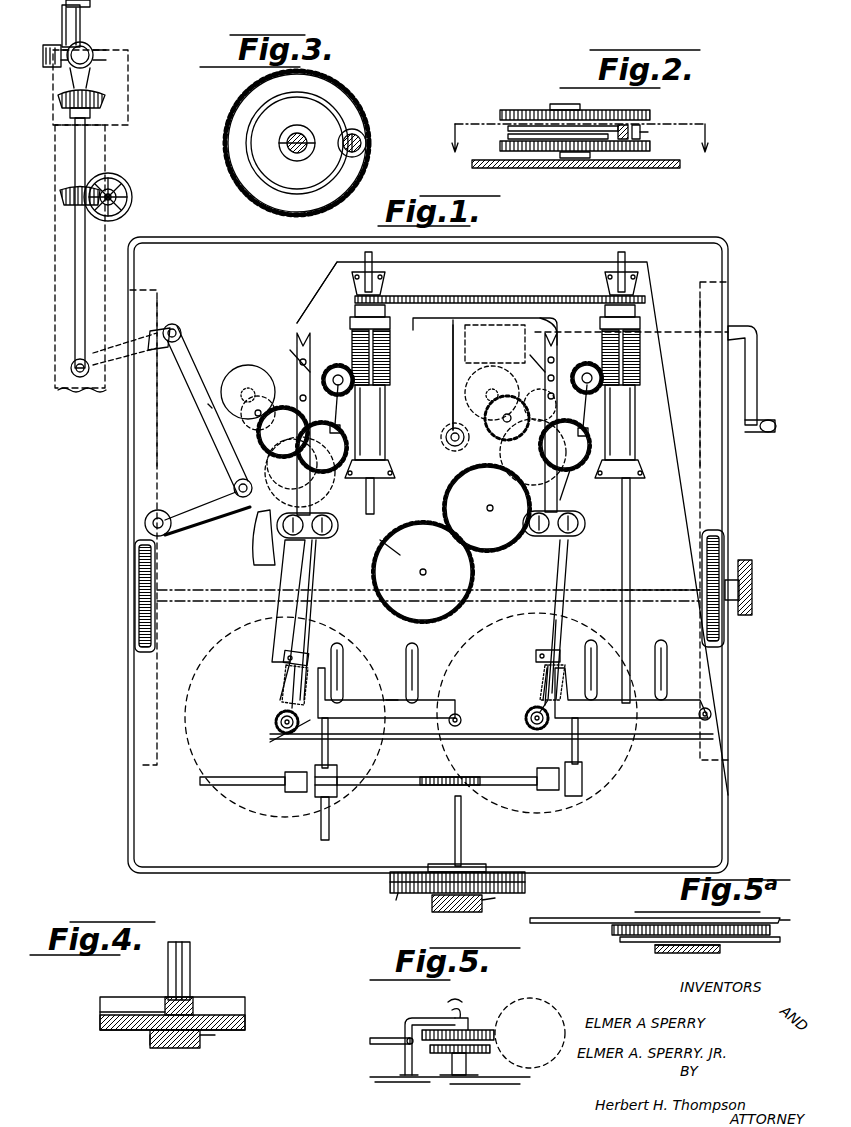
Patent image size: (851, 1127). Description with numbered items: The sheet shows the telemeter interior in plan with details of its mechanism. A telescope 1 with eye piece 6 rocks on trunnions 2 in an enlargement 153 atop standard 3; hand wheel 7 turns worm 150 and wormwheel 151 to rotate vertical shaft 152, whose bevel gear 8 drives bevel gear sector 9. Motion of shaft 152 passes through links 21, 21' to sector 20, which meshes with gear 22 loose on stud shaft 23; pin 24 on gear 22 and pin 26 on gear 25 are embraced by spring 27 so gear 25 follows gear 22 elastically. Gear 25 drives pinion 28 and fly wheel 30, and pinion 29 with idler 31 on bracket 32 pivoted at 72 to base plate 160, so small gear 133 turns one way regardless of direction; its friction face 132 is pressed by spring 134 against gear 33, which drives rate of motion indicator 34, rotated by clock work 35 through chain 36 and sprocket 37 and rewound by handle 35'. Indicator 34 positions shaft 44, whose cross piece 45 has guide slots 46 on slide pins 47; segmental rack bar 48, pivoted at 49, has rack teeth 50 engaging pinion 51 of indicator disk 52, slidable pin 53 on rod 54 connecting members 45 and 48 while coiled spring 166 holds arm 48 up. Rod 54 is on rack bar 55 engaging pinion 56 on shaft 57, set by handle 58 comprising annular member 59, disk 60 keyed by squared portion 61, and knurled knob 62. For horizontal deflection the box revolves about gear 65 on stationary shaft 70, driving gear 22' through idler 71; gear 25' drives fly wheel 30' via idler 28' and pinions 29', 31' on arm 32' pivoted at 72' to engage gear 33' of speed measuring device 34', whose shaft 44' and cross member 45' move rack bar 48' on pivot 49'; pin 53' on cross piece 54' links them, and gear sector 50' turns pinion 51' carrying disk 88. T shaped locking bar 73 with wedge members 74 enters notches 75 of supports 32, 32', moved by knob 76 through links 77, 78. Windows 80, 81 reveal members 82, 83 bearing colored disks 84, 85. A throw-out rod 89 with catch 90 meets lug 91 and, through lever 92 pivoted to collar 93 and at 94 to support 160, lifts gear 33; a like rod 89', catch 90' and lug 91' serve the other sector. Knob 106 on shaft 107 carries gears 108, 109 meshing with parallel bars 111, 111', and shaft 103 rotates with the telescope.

In FIG. 1, the telescope 1 is at (82, 25).
In FIG. 1, the horizontal axis trunnions 2 is at (89, 58).
In FIG. 1, the standard 3 is at (55, 262).
In FIG. 2, the standard 3 is at (579, 132).
In FIG. 1, the eye piece 6 is at (54, 46).
In FIG. 1, the hand wheel 7 is at (130, 183).
In FIG. 1, the bevel gear 8 is at (90, 113).
In FIG. 1, the bevel gear sector 9 is at (106, 100).
In FIG. 1, the worm 150 is at (118, 200).
In FIG. 1, the wormwheel 151 is at (72, 207).
In FIG. 1, the vertical shaft 152 is at (88, 154).
In FIG. 1, the enlargement 153 is at (128, 78).
In FIG. 1, the sector 20 is at (210, 408).
In FIG. 1, the link 21 is at (207, 410).
In FIG. 1, the link 21' is at (137, 335).
In FIG. 1, the gear 22 is at (302, 472).
In FIG. 3, the gear 22 is at (301, 143).
In FIG. 2, the gear 22 is at (588, 148).
In FIG. 1, the gear 22' is at (533, 452).
In FIG. 1, the stud shaft 23 is at (292, 464).
In FIG. 3, the stud shaft 23 is at (293, 133).
In FIG. 2, the stud shaft 23 is at (560, 108).
In FIG. 3, the pin 24 is at (366, 140).
In FIG. 2, the pin 24 is at (650, 128).
In FIG. 1, the second gear 25 is at (322, 447).
In FIG. 2, the second gear 25 is at (642, 113).
In FIG. 1, the gear 25' is at (581, 486).
In FIG. 3, the pin 26 is at (350, 132).
In FIG. 2, the pin 26 is at (615, 112).
In FIG. 3, the spring 27 is at (287, 192).
In FIG. 2, the spring 27 is at (508, 137).
In FIG. 1, the pinion 28 is at (258, 400).
In FIG. 1, the idler 28' is at (506, 424).
In FIG. 1, the pinion 29 is at (340, 409).
In FIG. 5a, the pinion 29 is at (685, 944).
In FIG. 1, the pinion 29' is at (535, 401).
In FIG. 1, the fly wheel 30 is at (239, 392).
In FIG. 1, the fly wheel 30' is at (492, 393).
In FIG. 1, the idler 31 is at (313, 416).
In FIG. 5a, the idler 31 is at (704, 949).
In FIG. 1, the second pinion 31' is at (538, 417).
In FIG. 1, the bracket 32 is at (283, 432).
In FIG. 5a, the bracket 32 is at (655, 912).
In FIG. 1, the arm 32' is at (565, 445).
In FIG. 1, the gear 33 is at (338, 367).
In FIG. 5, the gear 33 is at (472, 1029).
In FIG. 1, the gear 33' is at (587, 366).
In FIG. 1, the rate of motion indicator 34 is at (387, 409).
In FIG. 5, the rate of motion indicator 34 is at (530, 1022).
In FIG. 1, the speed measuring device 34' is at (631, 391).
In FIG. 1, the clock work 35 is at (495, 344).
In FIG. 1, the handle 35' is at (755, 379).
In FIG. 1, the chain 36 is at (446, 296).
In FIG. 1, the sprocket 37 is at (382, 290).
In FIG. 1, the shaft 44 is at (393, 546).
In FIG. 1, the shaft 44' is at (642, 590).
In FIG. 1, the cross piece 45 is at (389, 693).
In FIG. 1, the cross member 45' is at (626, 670).
In FIG. 1, the guide slots 46 is at (418, 648).
In FIG. 1, the slide pins 47 is at (418, 680).
In FIG. 1, the segmental rack bar 48 is at (487, 714).
In FIG. 1, the rack bar 48' is at (631, 714).
In FIG. 1, the pivot 49 is at (461, 705).
In FIG. 1, the pivot 49' is at (695, 701).
In FIG. 1, the rack teeth 50 is at (308, 685).
In FIG. 1, the gear sector 50' is at (535, 684).
In FIG. 1, the pinion 51 is at (269, 726).
In FIG. 1, the pinion 51' is at (520, 722).
In FIG. 1, the indicator disk 52 is at (190, 770).
In FIG. 1, the slidable pin 53 is at (340, 743).
In FIG. 1, the pin 53' is at (594, 741).
In FIG. 1, the rod 54 is at (300, 770).
In FIG. 1, the cross piece 54' is at (550, 767).
In FIG. 1, the slidable rack bar 55 is at (372, 788).
In FIG. 1, the pinion 56 is at (468, 776).
In FIG. 1, the shaft 57 is at (461, 830).
In FIG. 4, the shaft 57 is at (190, 960).
In FIG. 1, the setting handle 58 is at (501, 905).
In FIG. 4, the setting handle 58 is at (200, 1036).
In FIG. 1, the inner annular member 59 is at (390, 884).
In FIG. 4, the inner annular member 59 is at (120, 1000).
In FIG. 1, the intermediate disk 60 is at (397, 905).
In FIG. 4, the intermediate disk 60 is at (115, 1030).
In FIG. 4, the squared portion 61 is at (155, 1046).
In FIG. 1, the knurled knob 62 is at (457, 911).
In FIG. 4, the knurled knob 62 is at (185, 1048).
In FIG. 1, the gear 65 is at (470, 568).
In FIG. 1, the stationary shaft 70 is at (426, 572).
In FIG. 1, the idler 71 is at (487, 508).
In FIG. 1, the pivot 72 is at (280, 355).
In FIG. 5a, the pivot 72 is at (687, 958).
In FIG. 1, the pivot 72' is at (525, 358).
In FIG. 1, the T shaped locking bar 73 is at (485, 374).
In FIG. 1, the wedge shaped projecting members 74 is at (297, 323).
In FIG. 1, the notches 75 is at (557, 326).
In FIG. 5a, the notches 75 is at (796, 920).
In FIG. 1, the knob 76 is at (452, 452).
In FIG. 1, the link 77 is at (446, 438).
In FIG. 1, the second link 78 is at (453, 352).
In FIG. 1, the window 80 is at (288, 601).
In FIG. 1, the window 81 is at (566, 536).
In FIG. 1, the member 82 is at (315, 620).
In FIG. 1, the member 83 is at (545, 536).
In FIG. 1, the colored disk 84 is at (220, 536).
In FIG. 1, the colored disk 85 is at (336, 522).
In FIG. 1, the horizontal deflection disk 88 is at (521, 673).
In FIG. 1, the rod 89 is at (307, 649).
In FIG. 5, the rod 89 is at (382, 1028).
In FIG. 1, the arm 89' is at (568, 642).
In FIG. 1, the catch 90 is at (266, 686).
In FIG. 1, the rack 90' is at (565, 685).
In FIG. 1, the lug 91 is at (283, 664).
In FIG. 1, the clamp 91' is at (560, 648).
In FIG. 1, the irregularly shaped lever 92 is at (592, 410).
In FIG. 5, the irregularly shaped lever 92 is at (412, 1016).
In FIG. 5, the collar 93 is at (465, 1020).
In FIG. 5, the pivot 94 is at (405, 1070).
In FIG. 1, the shaft 103 is at (158, 510).
In FIG. 1, the knob 106 is at (752, 582).
In FIG. 1, the shaft 107 is at (652, 590).
In FIG. 1, the gear 108 is at (135, 578).
In FIG. 1, the gear 109 is at (715, 548).
In FIG. 1, the parallel bars 111 is at (126, 390).
In FIG. 1, the dashed outline 111' is at (695, 385).
In FIG. 5, the friction face 132 is at (490, 1048).
In FIG. 5, the small gear 133 is at (470, 1064).
In FIG. 5, the spring 134 is at (447, 993).
In FIG. 1, the base plate 160 is at (653, 295).
In FIG. 2, the base plate 160 is at (622, 170).
In FIG. 5, the base plate 160 is at (400, 1078).
In FIG. 5a, the base plate 160 is at (660, 953).
In FIG. 1, the coiled spring 166 is at (280, 736).